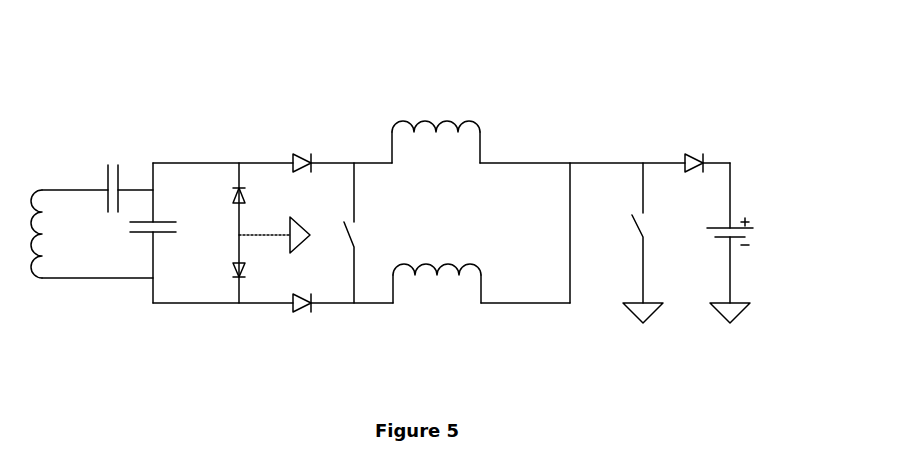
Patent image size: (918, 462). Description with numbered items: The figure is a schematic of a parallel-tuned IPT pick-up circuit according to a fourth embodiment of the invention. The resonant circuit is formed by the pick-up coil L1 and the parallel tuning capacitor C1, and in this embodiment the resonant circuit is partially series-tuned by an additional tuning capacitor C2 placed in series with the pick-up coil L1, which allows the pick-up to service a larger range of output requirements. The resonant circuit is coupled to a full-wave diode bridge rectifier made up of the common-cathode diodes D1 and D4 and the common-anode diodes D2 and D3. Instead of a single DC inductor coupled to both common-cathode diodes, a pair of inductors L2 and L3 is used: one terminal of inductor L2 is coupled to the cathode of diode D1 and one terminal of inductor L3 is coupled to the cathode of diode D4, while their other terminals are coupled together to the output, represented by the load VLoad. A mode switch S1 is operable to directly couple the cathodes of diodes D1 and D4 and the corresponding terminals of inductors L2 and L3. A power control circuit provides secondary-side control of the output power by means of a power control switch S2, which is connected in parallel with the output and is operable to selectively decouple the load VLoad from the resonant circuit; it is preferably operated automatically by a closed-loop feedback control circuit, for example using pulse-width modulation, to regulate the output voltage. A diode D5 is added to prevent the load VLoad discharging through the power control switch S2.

The pick-up coil L1 is at (52, 234).
The parallel tuning capacitor C1 is at (140, 238).
The additional tuning capacitor C2 is at (111, 173).
The common-cathode diode D1 is at (304, 148).
The common-anode diode D2 is at (222, 197).
The common-anode diode D3 is at (222, 271).
The common-cathode diode D4 is at (305, 328).
The diode D5 is at (693, 146).
The mode switch S1 is at (366, 233).
The power control switch S2 is at (632, 243).
The inductor L2 is at (436, 132).
The inductor L3 is at (437, 276).
The load VLoad is at (757, 243).